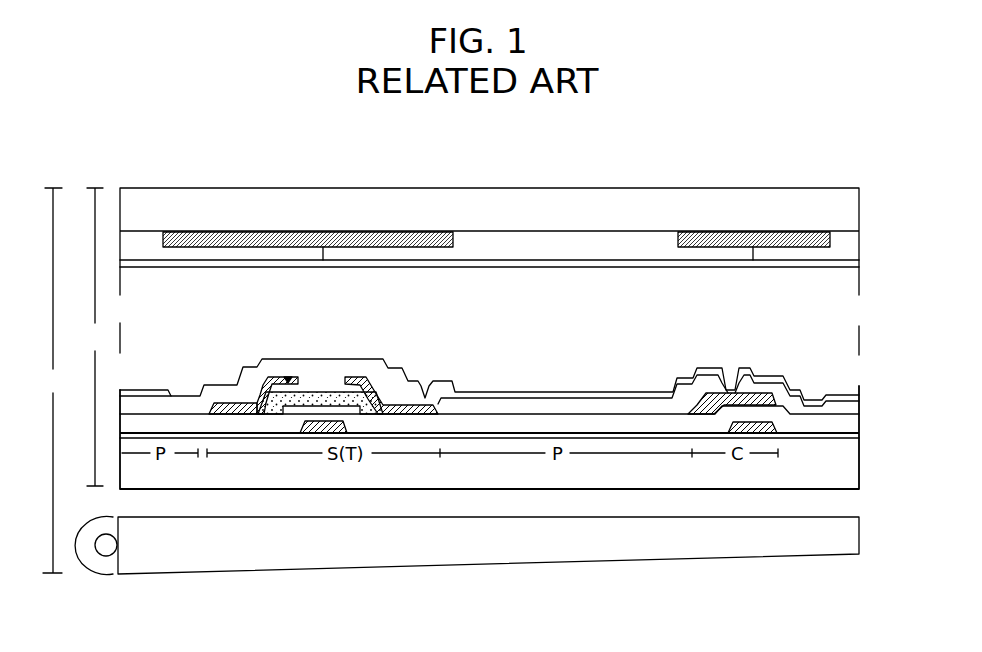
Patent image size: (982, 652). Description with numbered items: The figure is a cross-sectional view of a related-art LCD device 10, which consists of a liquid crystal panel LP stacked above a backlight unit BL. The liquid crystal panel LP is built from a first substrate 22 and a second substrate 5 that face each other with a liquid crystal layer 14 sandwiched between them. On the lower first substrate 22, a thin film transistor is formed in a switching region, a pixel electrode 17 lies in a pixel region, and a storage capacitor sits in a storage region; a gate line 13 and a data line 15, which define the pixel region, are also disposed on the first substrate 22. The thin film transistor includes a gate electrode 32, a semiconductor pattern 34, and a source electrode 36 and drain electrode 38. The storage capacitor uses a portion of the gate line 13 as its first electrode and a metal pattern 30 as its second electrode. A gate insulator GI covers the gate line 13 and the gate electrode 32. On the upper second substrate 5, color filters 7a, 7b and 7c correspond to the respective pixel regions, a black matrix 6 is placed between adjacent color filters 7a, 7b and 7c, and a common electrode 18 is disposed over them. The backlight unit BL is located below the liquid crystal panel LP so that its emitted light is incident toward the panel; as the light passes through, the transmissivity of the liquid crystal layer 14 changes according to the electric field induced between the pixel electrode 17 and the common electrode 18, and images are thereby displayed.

The LCD device 10 is at (55, 380).
The second substrate 5 is at (509, 217).
The black matrix 6 is at (318, 236).
The color filter 7a is at (147, 238).
The color filter 7b is at (549, 240).
The color filter 7c is at (846, 240).
The common electrode 18 is at (860, 264).
The liquid crystal layer 14 is at (852, 338).
The first substrate 22 is at (834, 481).
The gate electrode 32 is at (315, 422).
The gate line 13 is at (765, 421).
The semiconductor pattern 34 is at (288, 373).
The data line 15 is at (212, 398).
The source electrode 36 is at (255, 372).
The drain electrode 38 is at (378, 373).
The metal pattern 30 is at (702, 390).
The pixel electrode 17 is at (485, 389).
The gate insulator GI is at (853, 427).
The liquid crystal panel LP is at (95, 337).
The backlight unit BL is at (810, 573).